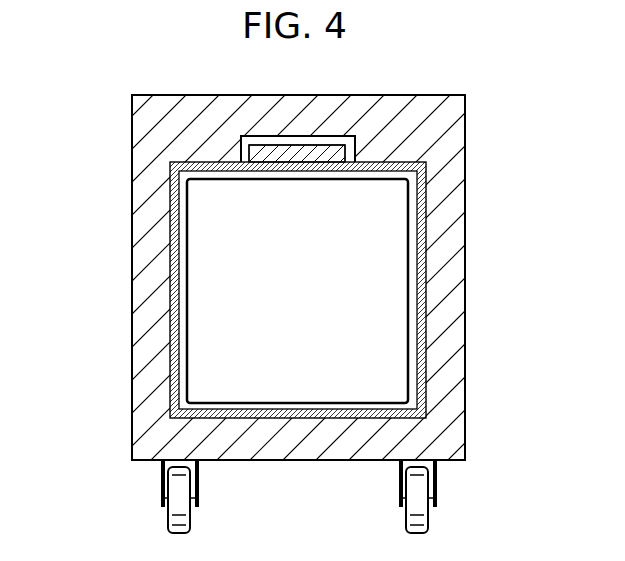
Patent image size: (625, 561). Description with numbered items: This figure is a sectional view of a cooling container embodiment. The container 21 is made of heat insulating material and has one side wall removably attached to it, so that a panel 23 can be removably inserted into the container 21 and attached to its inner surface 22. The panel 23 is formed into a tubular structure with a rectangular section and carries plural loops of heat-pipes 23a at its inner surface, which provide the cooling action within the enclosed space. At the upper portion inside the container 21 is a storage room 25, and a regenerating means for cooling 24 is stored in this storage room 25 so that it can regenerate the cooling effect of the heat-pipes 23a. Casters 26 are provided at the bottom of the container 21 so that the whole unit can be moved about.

The container 21 is at (448, 327).
The inner surface 22 is at (426, 235).
The panel 23 is at (180, 378).
The heat-pipes 23a is at (183, 310).
The regenerating means for cooling 24 is at (355, 147).
The storage room 25 is at (343, 150).
The caster 26 is at (437, 480).